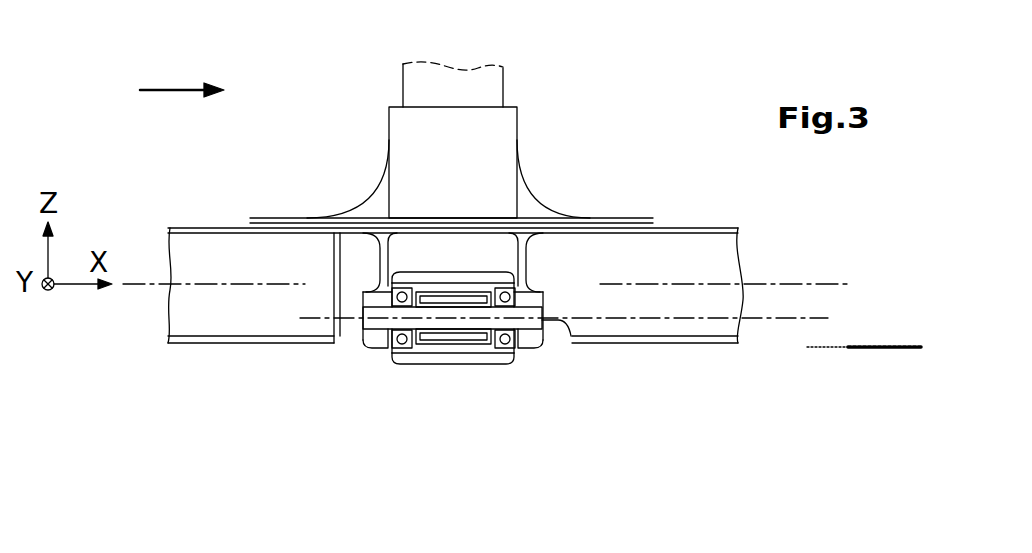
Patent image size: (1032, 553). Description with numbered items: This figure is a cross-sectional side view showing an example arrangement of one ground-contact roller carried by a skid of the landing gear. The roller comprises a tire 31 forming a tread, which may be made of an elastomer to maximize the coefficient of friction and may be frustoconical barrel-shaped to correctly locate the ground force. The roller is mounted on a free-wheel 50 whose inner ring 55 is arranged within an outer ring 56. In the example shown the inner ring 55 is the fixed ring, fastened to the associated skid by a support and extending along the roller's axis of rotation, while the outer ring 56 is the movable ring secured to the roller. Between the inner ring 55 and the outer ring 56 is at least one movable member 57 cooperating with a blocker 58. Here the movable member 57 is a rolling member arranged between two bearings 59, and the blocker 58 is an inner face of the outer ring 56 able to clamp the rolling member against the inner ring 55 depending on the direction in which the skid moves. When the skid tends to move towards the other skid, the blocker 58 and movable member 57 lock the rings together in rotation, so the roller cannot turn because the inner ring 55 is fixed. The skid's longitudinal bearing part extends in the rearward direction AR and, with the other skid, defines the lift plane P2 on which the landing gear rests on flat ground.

The movable member 57 is at (438, 296).
The outer ring 56 is at (472, 287).
The inner ring 55 is at (533, 311).
The blocker 58 is at (432, 346).
The bearings 59 is at (386, 338).
The tire 31 is at (446, 365).
The free-wheel 50 is at (472, 365).
The lift plane P2 is at (888, 346).
The rearward direction AR is at (184, 89).